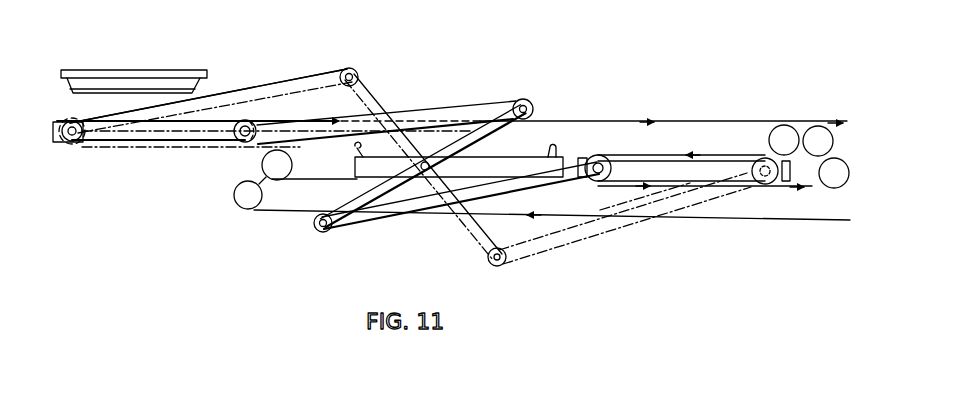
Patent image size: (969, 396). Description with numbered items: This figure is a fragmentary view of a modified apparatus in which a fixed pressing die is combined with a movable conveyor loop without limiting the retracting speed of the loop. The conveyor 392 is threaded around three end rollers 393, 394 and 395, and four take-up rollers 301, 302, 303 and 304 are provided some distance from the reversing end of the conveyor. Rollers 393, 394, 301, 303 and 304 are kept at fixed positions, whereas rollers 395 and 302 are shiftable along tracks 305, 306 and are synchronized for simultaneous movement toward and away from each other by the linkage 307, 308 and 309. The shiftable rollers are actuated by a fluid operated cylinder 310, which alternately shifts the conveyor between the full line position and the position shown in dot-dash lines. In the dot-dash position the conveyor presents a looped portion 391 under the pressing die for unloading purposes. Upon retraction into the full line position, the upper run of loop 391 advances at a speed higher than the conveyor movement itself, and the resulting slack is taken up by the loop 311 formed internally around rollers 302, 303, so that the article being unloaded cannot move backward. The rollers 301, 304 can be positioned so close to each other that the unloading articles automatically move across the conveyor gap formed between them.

The take-up roller 301 is at (784, 130).
The take-up roller 302 is at (593, 158).
The take-up roller 303 is at (828, 187).
The take-up roller 304 is at (818, 128).
The track 305 is at (143, 146).
The track 306 is at (792, 181).
The linkage 307 is at (447, 103).
The linkage 308 is at (363, 228).
The linkage 309 is at (366, 197).
The fluid operated cylinder 310 is at (503, 155).
The loop 311 is at (724, 190).
The looped portion 391 is at (281, 119).
The conveyor 392 is at (268, 212).
The end roller 393 is at (235, 198).
The end roller 394 is at (292, 164).
The end roller 395 is at (240, 146).